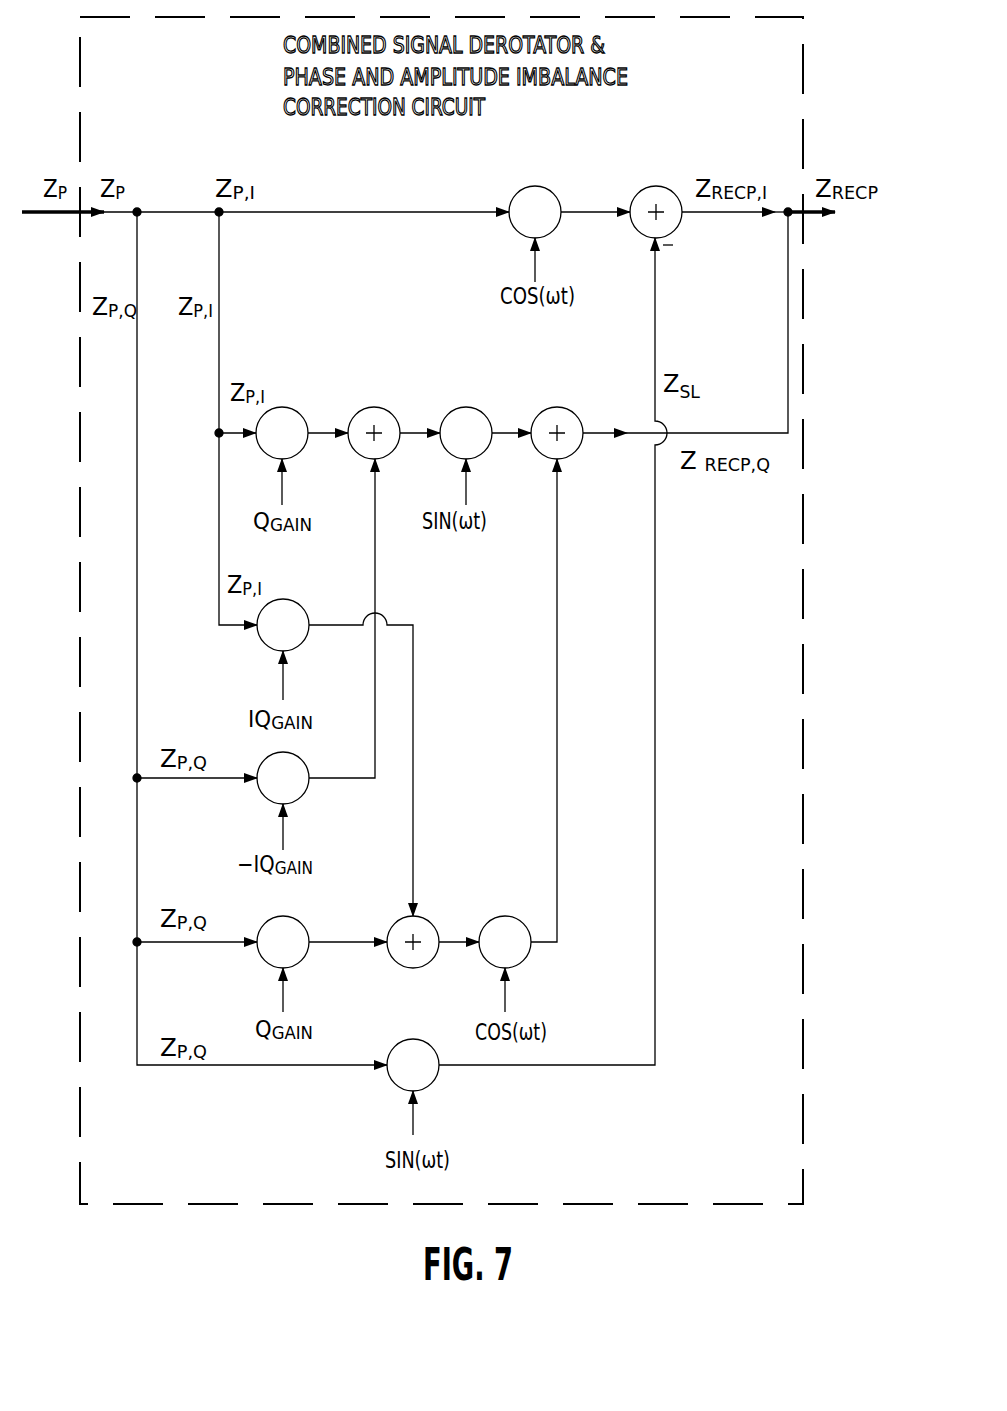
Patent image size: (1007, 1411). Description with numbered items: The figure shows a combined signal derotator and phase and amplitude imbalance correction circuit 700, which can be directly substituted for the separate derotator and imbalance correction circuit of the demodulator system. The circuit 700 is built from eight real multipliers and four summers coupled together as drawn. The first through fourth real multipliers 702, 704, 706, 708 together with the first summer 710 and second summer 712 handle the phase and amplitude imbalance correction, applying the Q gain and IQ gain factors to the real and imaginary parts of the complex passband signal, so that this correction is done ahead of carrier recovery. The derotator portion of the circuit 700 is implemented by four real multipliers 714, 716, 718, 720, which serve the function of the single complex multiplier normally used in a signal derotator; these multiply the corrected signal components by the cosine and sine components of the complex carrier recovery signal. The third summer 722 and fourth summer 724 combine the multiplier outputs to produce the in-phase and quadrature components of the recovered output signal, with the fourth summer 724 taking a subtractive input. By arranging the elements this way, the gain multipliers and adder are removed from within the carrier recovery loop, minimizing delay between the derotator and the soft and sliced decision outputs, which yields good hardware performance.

The combined signal derotator and phase and amplitude imbalance correction circuit 700 is at (198, 1205).
The first real multiplier 702 is at (300, 414).
The second real multiplier 704 is at (301, 606).
The third real multiplier 706 is at (301, 797).
The fourth real multiplier 708 is at (301, 961).
The first summer 710 is at (392, 414).
The second summer 712 is at (431, 923).
The fifth real multiplier 714 is at (553, 193).
The sixth real multiplier 716 is at (484, 414).
The seventh real multiplier 718 is at (523, 923).
The eighth real multiplier 720 is at (431, 1084).
The third summer 722 is at (575, 414).
The fourth summer 724 is at (674, 193).